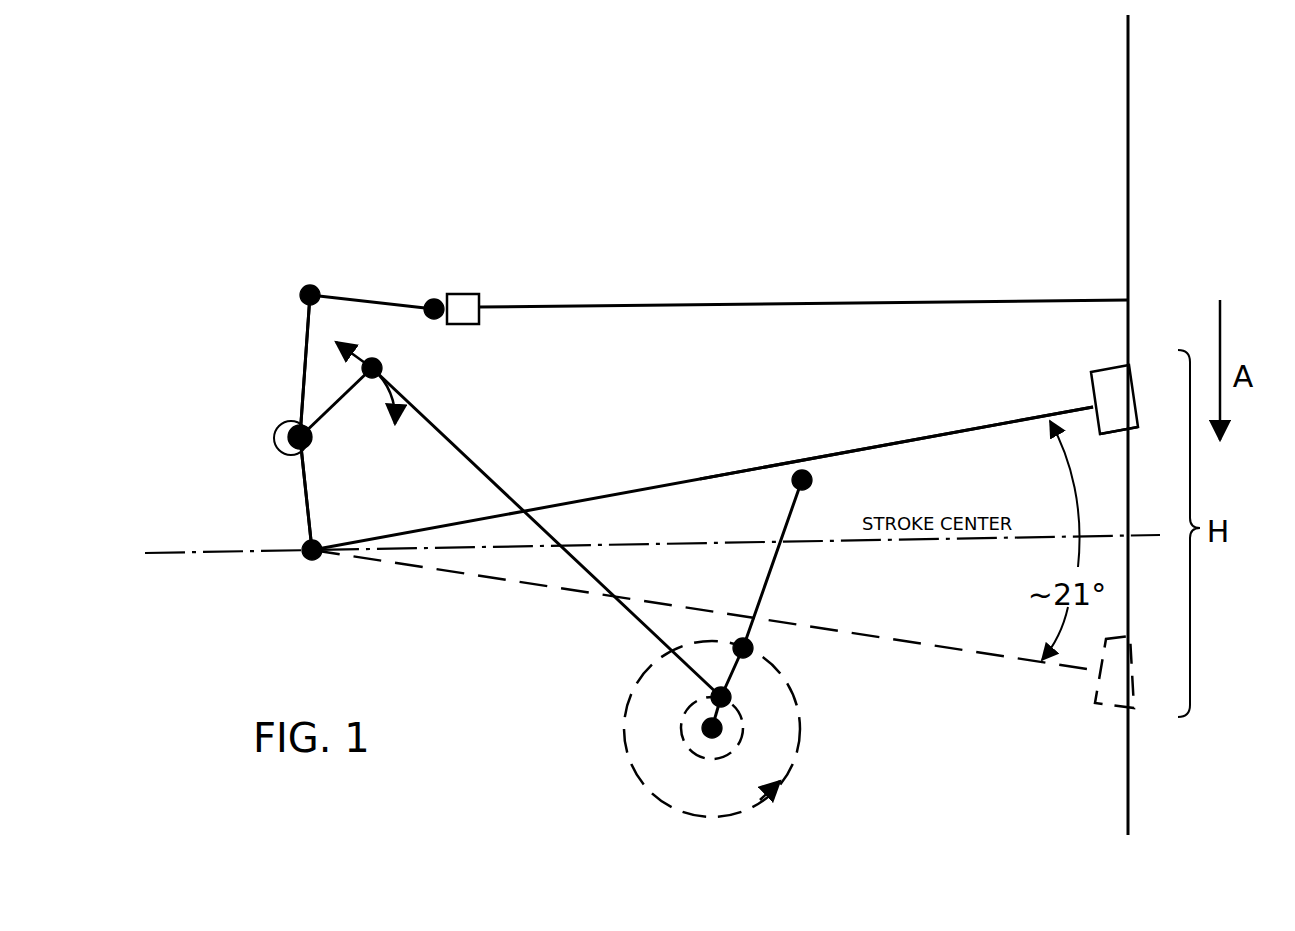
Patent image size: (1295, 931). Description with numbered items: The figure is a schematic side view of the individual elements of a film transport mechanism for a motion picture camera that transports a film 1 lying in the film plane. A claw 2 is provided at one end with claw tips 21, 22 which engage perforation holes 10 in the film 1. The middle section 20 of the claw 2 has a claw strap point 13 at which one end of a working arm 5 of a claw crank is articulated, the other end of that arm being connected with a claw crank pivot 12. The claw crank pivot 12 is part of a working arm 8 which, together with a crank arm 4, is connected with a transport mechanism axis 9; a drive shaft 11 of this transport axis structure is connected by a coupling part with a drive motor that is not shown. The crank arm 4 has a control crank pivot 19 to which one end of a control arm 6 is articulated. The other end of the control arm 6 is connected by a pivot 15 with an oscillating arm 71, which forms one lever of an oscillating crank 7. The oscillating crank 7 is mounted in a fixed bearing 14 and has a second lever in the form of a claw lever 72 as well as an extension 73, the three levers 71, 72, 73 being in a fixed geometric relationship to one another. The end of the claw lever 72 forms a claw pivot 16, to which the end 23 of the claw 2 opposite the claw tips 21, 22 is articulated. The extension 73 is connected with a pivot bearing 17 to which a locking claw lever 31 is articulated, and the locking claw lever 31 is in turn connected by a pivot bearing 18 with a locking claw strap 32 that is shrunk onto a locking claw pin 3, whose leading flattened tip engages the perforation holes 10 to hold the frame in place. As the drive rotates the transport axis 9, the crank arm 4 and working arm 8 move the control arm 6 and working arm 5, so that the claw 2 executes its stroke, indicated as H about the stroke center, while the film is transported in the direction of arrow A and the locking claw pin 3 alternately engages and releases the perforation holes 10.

The film 1 is at (1131, 310).
The claw 2 is at (877, 446).
The locking claw pin 3 is at (717, 300).
The crank arm 4 is at (716, 727).
The working arm 5 is at (764, 576).
The control arm 6 is at (460, 452).
The oscillating crank 7 is at (229, 420).
The working arm 8 is at (733, 682).
The transport mechanism axis 9 is at (781, 856).
The perforation holes 10 is at (1141, 642).
The drive shaft 11 is at (708, 732).
The claw crank pivot 12 is at (755, 650).
The claw strap point 13 is at (814, 479).
The fixed bearing 14 is at (276, 436).
The pivot 15 is at (391, 382).
The claw pivot 16 is at (318, 558).
The pivot bearing 17 is at (310, 284).
The pivot bearing 18 is at (436, 300).
The control crank pivot 19 is at (713, 692).
The middle section 20 is at (680, 480).
The claw tip 21 is at (1132, 380).
The claw tip 22 is at (1134, 431).
The end of claw 23 is at (467, 527).
The locking claw lever 31 is at (386, 298).
The locking claw strap 32 is at (480, 300).
The oscillating arm 71 is at (337, 403).
The claw lever 72 is at (304, 528).
The extension 73 is at (305, 342).